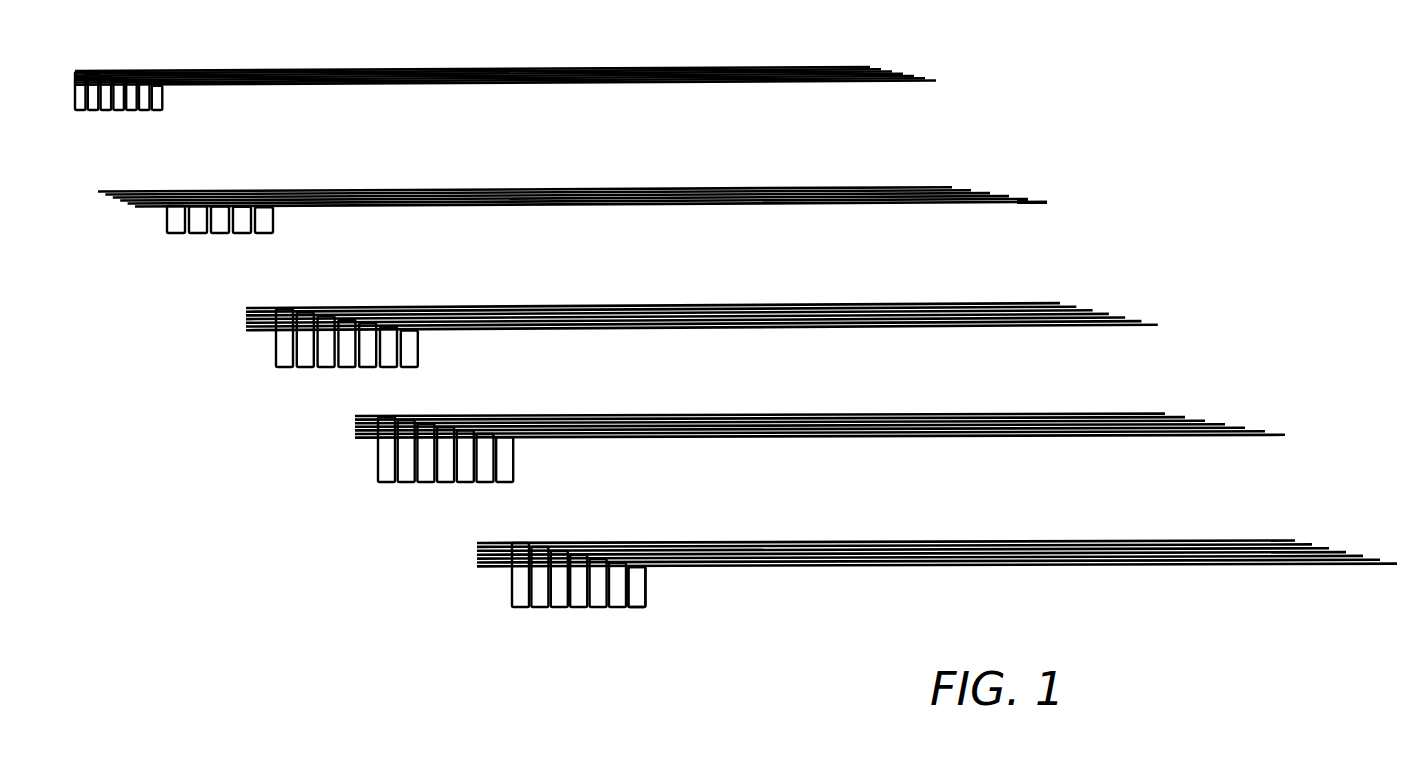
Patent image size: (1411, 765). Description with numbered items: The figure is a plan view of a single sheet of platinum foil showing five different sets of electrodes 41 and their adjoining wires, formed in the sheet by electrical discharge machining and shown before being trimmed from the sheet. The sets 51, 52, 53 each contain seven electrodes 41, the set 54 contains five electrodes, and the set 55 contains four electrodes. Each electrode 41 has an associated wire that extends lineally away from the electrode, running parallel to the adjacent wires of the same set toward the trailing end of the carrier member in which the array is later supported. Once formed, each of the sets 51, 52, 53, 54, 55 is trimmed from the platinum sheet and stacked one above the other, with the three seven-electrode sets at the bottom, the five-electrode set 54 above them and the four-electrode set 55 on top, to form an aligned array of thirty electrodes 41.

The electrode 41 is at (646, 592).
The first set of electrodes 51 is at (505, 602).
The second set of electrodes 52 is at (380, 486).
The third set of electrodes 53 is at (260, 365).
The set of five electrodes 54 is at (160, 249).
The set of four electrodes 55 is at (132, 127).